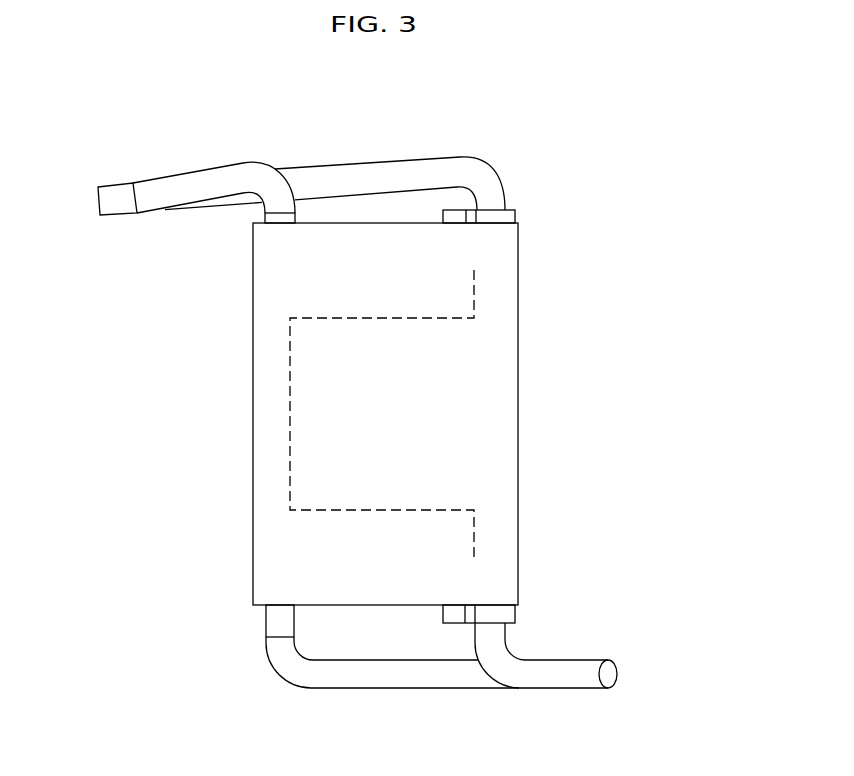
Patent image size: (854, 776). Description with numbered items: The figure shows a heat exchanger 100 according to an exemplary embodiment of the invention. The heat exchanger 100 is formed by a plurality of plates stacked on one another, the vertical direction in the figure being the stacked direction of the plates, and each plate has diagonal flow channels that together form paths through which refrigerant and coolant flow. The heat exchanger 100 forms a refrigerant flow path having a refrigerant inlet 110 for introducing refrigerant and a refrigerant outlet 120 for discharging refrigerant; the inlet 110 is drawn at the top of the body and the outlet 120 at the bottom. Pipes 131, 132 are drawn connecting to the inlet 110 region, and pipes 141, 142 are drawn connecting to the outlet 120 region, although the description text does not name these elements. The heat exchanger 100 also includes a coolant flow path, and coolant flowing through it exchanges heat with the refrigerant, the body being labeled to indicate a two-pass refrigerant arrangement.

The heat exchanger 100 is at (553, 421).
The refrigerant inlet 110 is at (515, 217).
The refrigerant outlet 120 is at (505, 614).
The first inlet pipe 131 is at (202, 182).
The second inlet pipe 132 is at (378, 177).
The first outlet pipe 141 is at (568, 677).
The second outlet pipe 142 is at (377, 677).